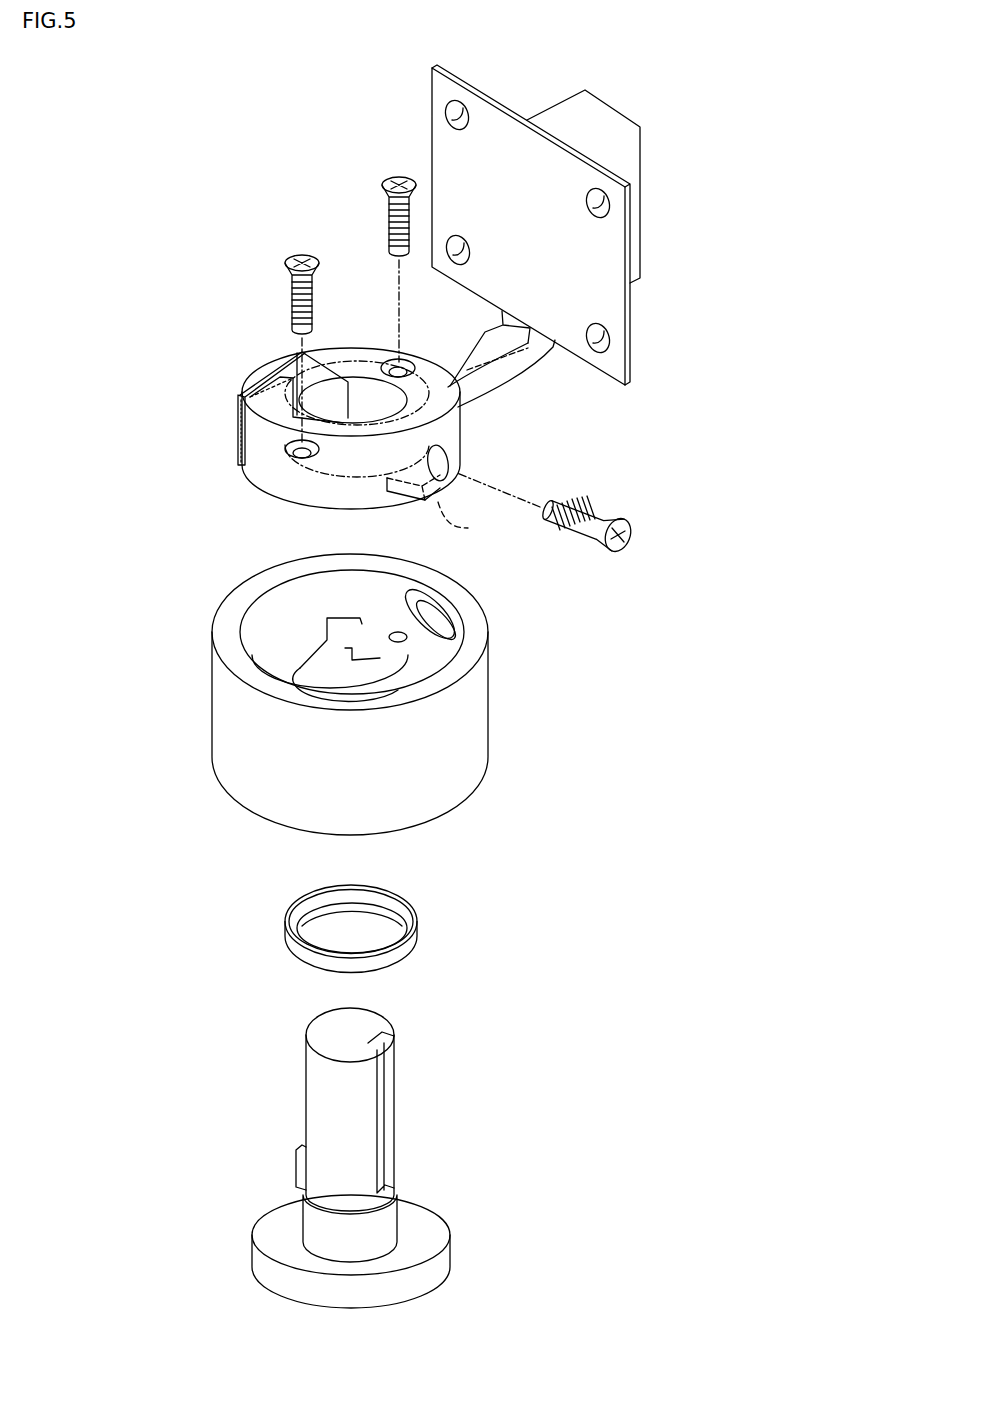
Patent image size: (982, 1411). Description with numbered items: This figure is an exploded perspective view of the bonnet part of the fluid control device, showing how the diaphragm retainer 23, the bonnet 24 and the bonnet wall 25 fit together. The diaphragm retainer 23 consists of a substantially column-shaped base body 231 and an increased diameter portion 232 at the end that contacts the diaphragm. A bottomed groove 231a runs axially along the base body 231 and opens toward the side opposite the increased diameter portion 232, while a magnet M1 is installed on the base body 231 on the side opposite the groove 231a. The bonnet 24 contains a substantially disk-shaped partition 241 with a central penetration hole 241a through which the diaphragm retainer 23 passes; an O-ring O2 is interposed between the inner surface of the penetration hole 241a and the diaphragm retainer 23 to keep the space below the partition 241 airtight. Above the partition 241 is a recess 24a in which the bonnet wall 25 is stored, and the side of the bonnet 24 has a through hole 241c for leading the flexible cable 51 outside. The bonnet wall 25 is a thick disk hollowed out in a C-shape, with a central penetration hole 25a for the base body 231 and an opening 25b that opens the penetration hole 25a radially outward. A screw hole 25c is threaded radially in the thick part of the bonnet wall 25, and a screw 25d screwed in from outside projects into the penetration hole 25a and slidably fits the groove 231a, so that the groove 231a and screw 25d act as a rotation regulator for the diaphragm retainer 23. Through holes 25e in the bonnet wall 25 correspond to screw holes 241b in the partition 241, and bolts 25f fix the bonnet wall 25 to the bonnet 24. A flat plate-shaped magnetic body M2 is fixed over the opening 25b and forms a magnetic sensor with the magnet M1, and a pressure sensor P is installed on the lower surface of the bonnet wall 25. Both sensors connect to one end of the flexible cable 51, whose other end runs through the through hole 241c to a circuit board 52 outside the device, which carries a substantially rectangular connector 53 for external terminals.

The circuit board 52 is at (628, 338).
The connector 53 is at (642, 248).
The bolt 25f is at (392, 176).
The bonnet wall 25 is at (338, 436).
The penetration hole 25a is at (397, 420).
The opening 25b is at (305, 397).
The through hole 25e is at (393, 373).
The screw hole 25c is at (448, 462).
The screw 25d is at (640, 535).
The pressure sensor P is at (464, 521).
The magnetic body M2 is at (238, 422).
The flexible cable 51 is at (475, 335).
The bonnet 24 is at (376, 694).
The recess 24a is at (350, 607).
The partition 241 is at (428, 658).
The penetration hole 241a is at (318, 670).
The screw hole 241b is at (400, 642).
The through hole 241c is at (440, 620).
The O-ring O2 is at (417, 937).
The diaphragm retainer 23 is at (355, 1126).
The base body 231 is at (307, 1083).
The groove 231a is at (385, 1045).
The magnet M1 is at (300, 1165).
The increased diameter portion 232 is at (450, 1247).